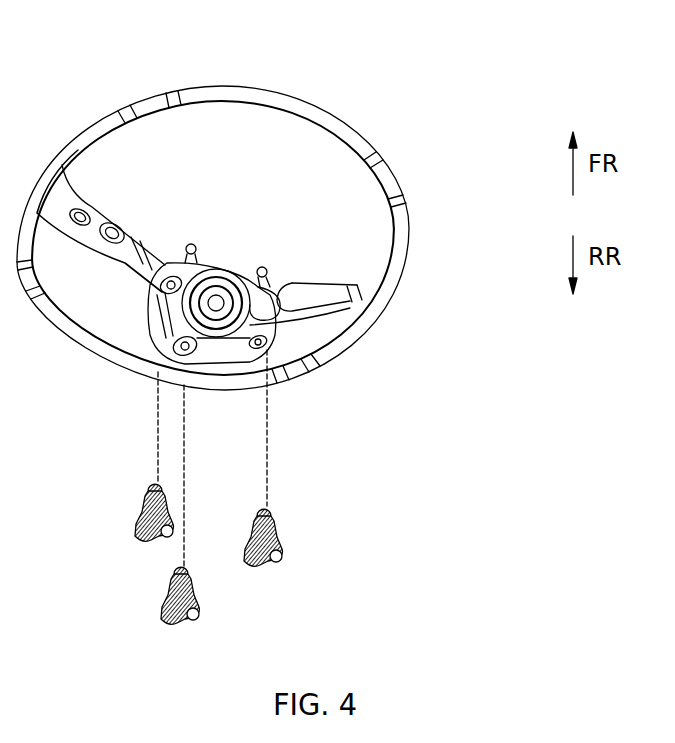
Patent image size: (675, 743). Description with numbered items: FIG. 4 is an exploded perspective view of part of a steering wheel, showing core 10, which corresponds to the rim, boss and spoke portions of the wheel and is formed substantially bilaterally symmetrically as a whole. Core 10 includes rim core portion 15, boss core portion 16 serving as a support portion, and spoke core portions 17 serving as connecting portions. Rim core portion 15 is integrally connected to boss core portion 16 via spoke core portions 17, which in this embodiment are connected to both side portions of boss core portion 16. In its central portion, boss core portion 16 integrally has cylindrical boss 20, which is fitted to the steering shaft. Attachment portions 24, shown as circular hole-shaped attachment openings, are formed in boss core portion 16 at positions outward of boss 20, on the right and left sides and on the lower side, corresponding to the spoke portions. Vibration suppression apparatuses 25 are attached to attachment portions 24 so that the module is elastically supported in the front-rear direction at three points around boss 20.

The core 10 is at (351, 77).
The rim core portion 15 is at (410, 236).
The boss core portion 16 is at (222, 270).
The spoke core portion 17 is at (98, 209).
The boss 20 is at (214, 269).
The attachment portion 24 is at (160, 294).
The vibration suppression apparatus 25 is at (134, 534).